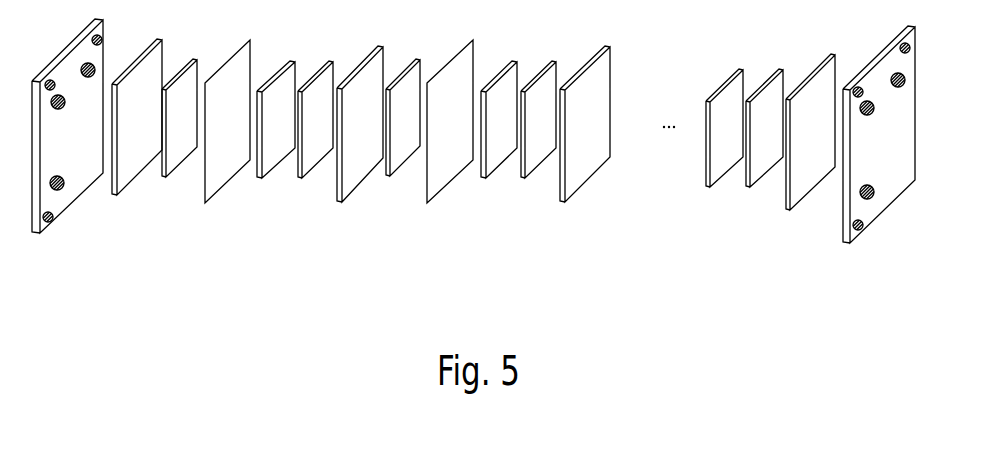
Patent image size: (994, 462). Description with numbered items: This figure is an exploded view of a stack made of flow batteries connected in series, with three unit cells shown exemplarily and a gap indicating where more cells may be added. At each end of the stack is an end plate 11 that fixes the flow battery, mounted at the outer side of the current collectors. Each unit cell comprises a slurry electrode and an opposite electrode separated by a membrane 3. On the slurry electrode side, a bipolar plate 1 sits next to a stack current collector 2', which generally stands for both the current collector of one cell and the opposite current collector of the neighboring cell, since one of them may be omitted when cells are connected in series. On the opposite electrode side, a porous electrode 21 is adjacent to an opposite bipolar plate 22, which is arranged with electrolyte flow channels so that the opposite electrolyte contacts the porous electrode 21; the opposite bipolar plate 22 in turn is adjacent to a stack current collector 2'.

The end plate 11 is at (48, 237).
The stack current collector 2' is at (463, 152).
The bipolar plate 1 is at (167, 178).
The membrane 3 is at (218, 197).
The porous electrode 21 is at (260, 182).
The opposite bipolar plate 22 is at (297, 182).